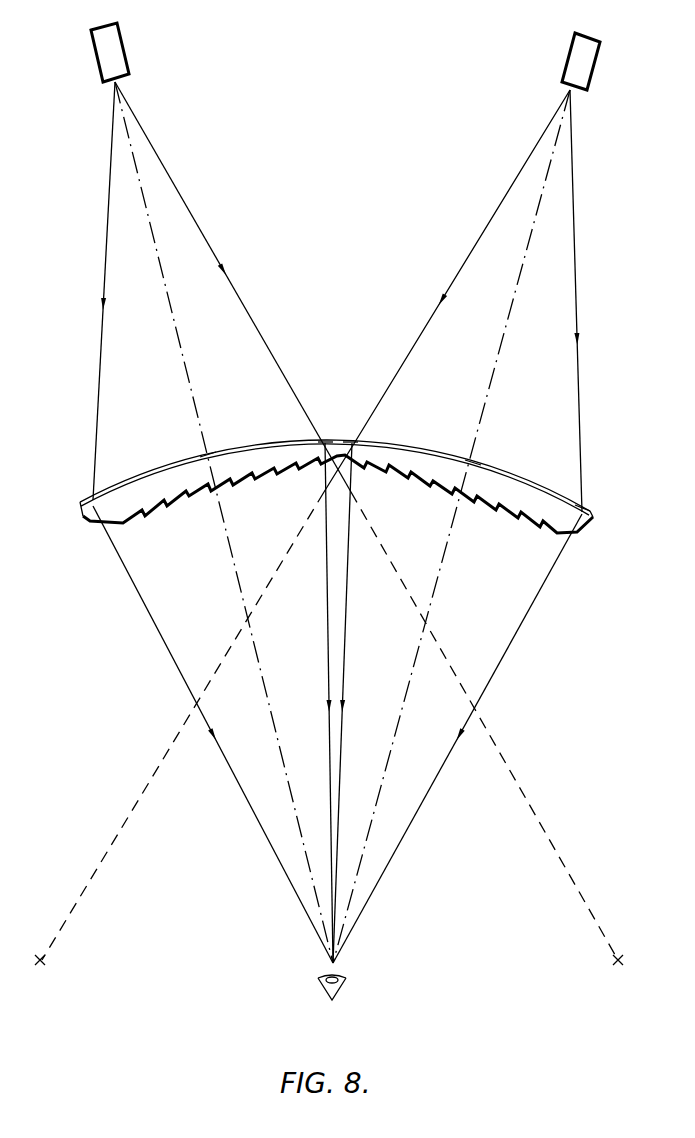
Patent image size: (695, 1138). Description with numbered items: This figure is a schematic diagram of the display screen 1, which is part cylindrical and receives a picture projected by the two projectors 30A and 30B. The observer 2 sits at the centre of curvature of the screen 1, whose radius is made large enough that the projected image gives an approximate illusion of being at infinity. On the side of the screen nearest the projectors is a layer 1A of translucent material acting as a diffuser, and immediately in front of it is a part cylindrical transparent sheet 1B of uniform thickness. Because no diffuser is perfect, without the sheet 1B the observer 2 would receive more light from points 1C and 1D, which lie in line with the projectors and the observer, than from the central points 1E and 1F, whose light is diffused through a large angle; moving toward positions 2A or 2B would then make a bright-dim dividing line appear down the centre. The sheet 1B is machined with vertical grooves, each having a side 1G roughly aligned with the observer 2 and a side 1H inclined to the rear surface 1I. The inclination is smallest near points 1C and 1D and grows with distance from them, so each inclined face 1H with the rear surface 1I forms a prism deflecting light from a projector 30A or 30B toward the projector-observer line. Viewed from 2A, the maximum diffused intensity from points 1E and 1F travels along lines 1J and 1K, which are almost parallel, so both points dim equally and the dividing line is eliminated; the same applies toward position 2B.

The screen 1 is at (366, 452).
The layer of translucent material 1A is at (583, 503).
The part cylindrical transparent sheet 1B is at (593, 523).
The point on screen 1C is at (473, 463).
The point on screen 1D is at (208, 457).
The point on screen 1E is at (350, 442).
The point on screen 1F is at (325, 442).
The groove side 1G is at (303, 468).
The inclined groove side 1H is at (296, 467).
The rear surface of acrylic sheet 1I is at (538, 485).
The line of maximum diffused intensity 1J is at (347, 603).
The line of maximum diffused intensity 1K is at (327, 603).
The observer 2 is at (332, 1003).
The observer position 2A is at (36, 975).
The observer position 2B is at (621, 977).
The projector 30A is at (115, 50).
The projector 30B is at (575, 62).